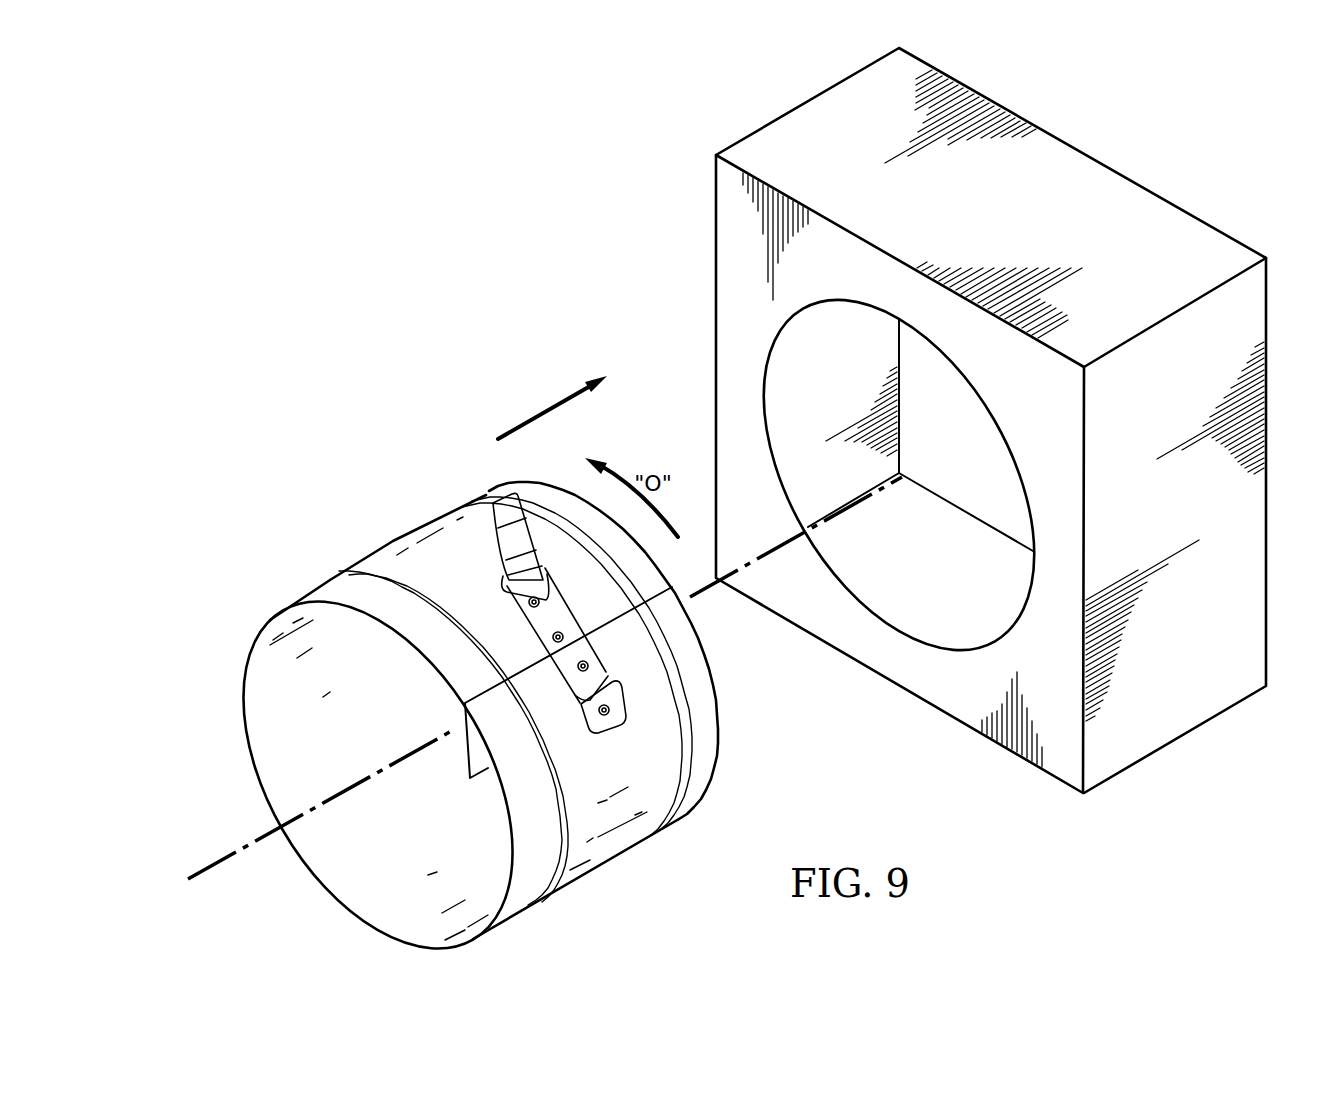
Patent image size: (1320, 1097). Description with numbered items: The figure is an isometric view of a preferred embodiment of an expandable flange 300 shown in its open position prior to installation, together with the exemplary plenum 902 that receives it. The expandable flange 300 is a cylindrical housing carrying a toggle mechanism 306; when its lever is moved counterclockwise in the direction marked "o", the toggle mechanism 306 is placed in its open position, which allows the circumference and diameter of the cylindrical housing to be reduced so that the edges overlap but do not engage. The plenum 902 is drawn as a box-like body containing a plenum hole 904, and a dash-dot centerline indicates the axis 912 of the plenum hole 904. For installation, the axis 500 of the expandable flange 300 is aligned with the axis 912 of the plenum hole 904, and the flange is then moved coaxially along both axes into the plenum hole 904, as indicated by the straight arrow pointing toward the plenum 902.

The expandable flange 300 is at (382, 540).
The toggle mechanism 306 is at (640, 676).
The axis 500 is at (217, 862).
The plenum 902 is at (1084, 152).
The plenum hole 904 is at (799, 318).
The axis 912 is at (859, 507).